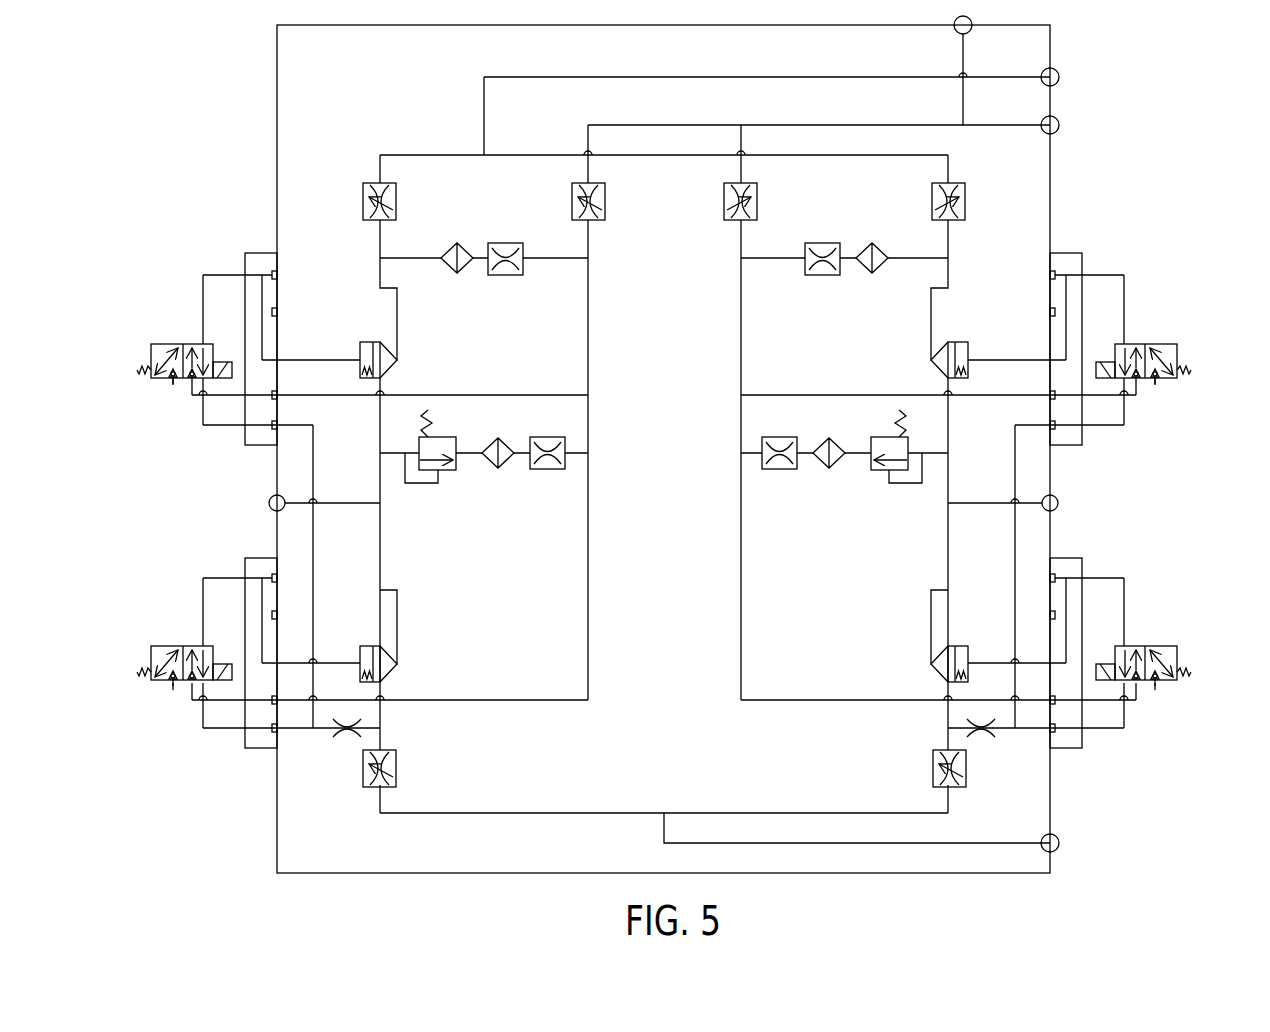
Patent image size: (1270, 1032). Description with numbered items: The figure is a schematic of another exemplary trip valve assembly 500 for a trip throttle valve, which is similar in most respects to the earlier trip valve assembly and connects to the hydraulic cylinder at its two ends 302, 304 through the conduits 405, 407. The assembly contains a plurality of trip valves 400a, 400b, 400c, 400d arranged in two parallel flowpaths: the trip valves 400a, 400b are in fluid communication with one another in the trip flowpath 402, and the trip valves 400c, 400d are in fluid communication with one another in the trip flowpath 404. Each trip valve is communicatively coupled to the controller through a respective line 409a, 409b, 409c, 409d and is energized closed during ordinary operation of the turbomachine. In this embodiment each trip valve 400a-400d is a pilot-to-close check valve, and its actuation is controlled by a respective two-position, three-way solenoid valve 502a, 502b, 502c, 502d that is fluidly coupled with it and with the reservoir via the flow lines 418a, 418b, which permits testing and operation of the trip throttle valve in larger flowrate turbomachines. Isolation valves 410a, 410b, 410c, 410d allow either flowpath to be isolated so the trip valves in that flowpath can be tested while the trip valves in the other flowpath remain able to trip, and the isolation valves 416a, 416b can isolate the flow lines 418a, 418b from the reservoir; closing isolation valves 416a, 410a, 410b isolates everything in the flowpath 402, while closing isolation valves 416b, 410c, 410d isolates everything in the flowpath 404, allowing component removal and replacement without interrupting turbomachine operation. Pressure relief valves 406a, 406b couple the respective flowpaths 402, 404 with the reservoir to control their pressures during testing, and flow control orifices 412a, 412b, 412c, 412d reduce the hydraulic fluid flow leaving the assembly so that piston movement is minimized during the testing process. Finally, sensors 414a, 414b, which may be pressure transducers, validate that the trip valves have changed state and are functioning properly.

The trip valve assembly 500 is at (1168, 72).
The end of the hydraulic cylinder 302 is at (1059, 124).
The end of the hydraulic cylinder 304 is at (1059, 843).
The trip valve 400a is at (370, 644).
The trip valve 400b is at (370, 341).
The trip valve 400c is at (955, 644).
The trip valve 400d is at (955, 341).
The trip flowpath 402 is at (381, 558).
The trip flowpath 404 is at (947, 558).
The conduit 405 is at (666, 157).
The pressure relief valve 406a is at (452, 474).
The pressure relief valve 406b is at (872, 474).
The conduit 407 is at (778, 811).
The line 409a is at (152, 630).
The line 409b is at (152, 327).
The line 409c is at (1180, 630).
The line 409d is at (1181, 327).
The isolation valve 410a is at (400, 770).
The isolation valve 410b is at (357, 201).
The isolation valve 410c is at (931, 770).
The isolation valve 410d is at (968, 203).
The flow control orifice 412a is at (522, 474).
The flow control orifice 412b is at (472, 279).
The flow control orifice 412c is at (798, 474).
The flow control orifice 412d is at (845, 279).
The sensor 414a is at (268, 501).
The sensor 414b is at (1059, 501).
The isolation valve 416a is at (572, 200).
The isolation valve 416b is at (757, 200).
The flow line 418a is at (590, 358).
The flow line 418b is at (740, 318).
The two-position, three-way solenoid valve 502a is at (172, 644).
The two-position, three-way solenoid valve 502b is at (172, 340).
The two-position, three-way solenoid valve 502c is at (1155, 644).
The two-position, three-way solenoid valve 502d is at (1155, 340).